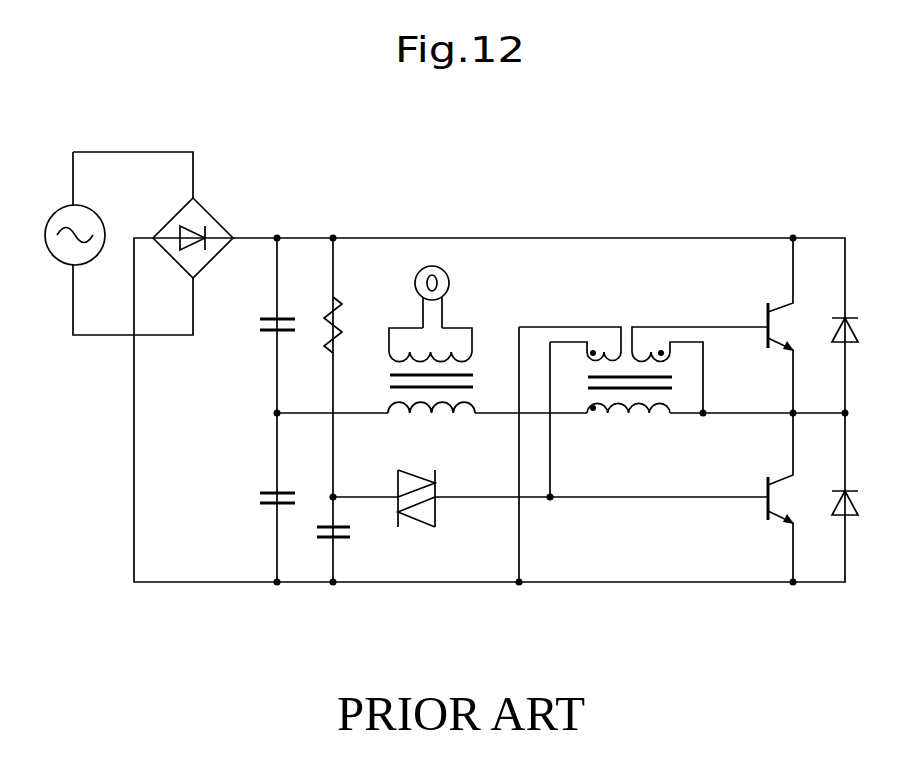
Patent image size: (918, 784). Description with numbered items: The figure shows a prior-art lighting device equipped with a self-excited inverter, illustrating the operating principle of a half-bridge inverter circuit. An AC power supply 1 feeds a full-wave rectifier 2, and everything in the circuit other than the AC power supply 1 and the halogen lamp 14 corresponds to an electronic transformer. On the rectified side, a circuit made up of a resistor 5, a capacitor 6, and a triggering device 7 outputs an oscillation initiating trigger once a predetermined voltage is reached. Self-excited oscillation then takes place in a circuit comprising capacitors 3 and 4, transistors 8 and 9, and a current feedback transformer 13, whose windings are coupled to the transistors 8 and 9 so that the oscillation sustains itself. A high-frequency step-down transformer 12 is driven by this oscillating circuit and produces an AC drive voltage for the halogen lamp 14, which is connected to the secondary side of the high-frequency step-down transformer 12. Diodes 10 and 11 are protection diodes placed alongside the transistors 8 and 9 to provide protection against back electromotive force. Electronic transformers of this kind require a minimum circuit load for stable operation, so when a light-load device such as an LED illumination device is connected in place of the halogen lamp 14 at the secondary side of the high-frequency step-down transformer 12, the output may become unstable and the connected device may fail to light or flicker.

The AC power supply 1 is at (118, 243).
The full-wave rectifier 2 is at (193, 232).
The capacitor 3 is at (270, 313).
The capacitor 4 is at (270, 485).
The resistor 5 is at (322, 319).
The capacitor 6 is at (325, 518).
The triggering device 7 is at (405, 488).
The transistor 8 is at (769, 325).
The transistor 9 is at (769, 497).
The diode 10 is at (855, 313).
The diode 11 is at (854, 484).
The high-frequency step-down transformer 12 is at (416, 382).
The current feedback transformer 13 is at (643, 370).
The halogen lamp 14 is at (432, 285).